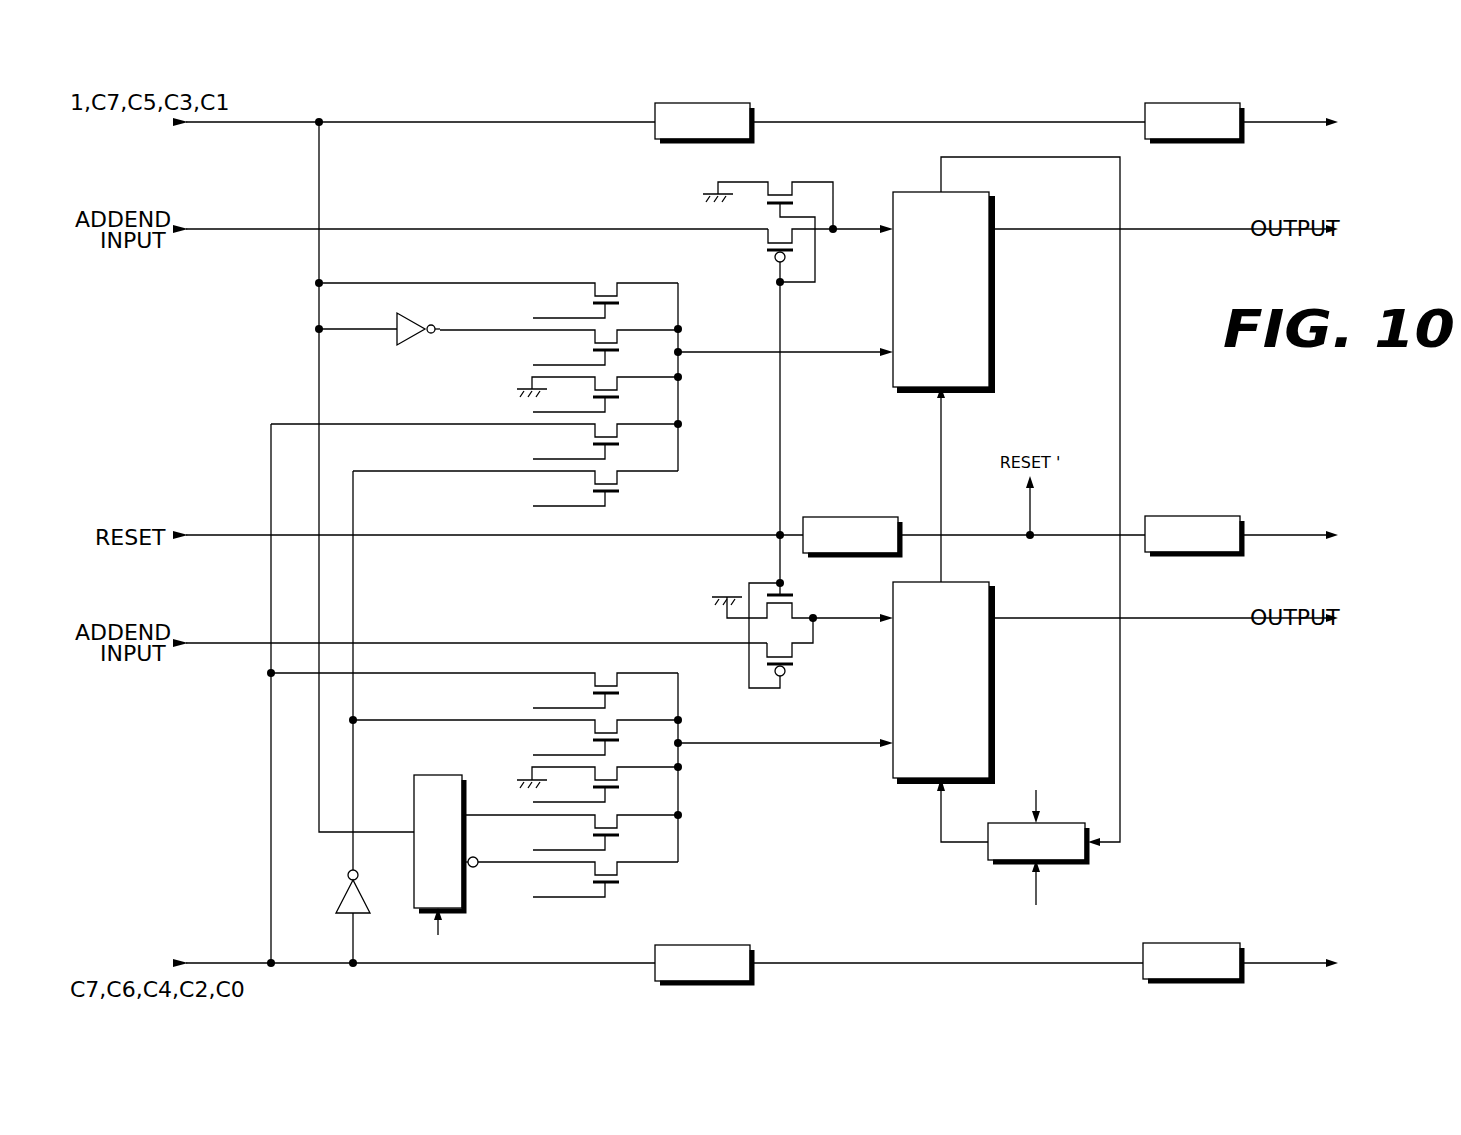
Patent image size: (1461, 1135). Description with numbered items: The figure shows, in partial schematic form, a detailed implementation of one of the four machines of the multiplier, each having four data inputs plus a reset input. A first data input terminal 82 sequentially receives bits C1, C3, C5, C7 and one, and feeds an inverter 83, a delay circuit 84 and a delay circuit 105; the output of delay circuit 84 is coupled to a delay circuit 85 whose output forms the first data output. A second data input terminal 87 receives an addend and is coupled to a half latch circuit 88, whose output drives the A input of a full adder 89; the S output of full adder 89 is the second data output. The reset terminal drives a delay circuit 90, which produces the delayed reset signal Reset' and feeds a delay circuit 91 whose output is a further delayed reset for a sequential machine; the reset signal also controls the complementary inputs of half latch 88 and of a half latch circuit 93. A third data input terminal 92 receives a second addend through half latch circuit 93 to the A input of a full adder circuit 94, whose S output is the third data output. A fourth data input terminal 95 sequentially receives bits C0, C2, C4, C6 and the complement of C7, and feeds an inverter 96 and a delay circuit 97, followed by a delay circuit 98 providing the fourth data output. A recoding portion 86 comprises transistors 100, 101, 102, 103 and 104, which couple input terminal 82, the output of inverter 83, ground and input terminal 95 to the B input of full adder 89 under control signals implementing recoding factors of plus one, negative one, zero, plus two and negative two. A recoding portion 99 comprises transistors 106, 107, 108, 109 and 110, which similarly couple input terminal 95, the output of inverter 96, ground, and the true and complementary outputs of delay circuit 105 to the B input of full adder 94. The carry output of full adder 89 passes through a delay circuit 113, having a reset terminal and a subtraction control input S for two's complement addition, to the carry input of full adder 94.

The first data input terminal 82 is at (319, 121).
The inverter 83 is at (411, 338).
The delay circuit 84 is at (740, 103).
The delay circuit 85 is at (1230, 103).
The recoding portion 86 is at (582, 372).
The second data input terminal 87 is at (224, 229).
The half latch circuit 88 is at (676, 208).
The full adder 89 is at (991, 288).
The delay circuit 90 is at (853, 517).
The delay circuit 91 is at (1230, 516).
The third data input terminal 92 is at (229, 643).
The half latch circuit 93 is at (696, 622).
The full adder circuit 94 is at (991, 678).
The fourth data input terminal 95 is at (270, 963).
The inverter 96 is at (340, 900).
The delay circuit 97 is at (740, 945).
The delay circuit 98 is at (1230, 943).
The recoding portion 99 is at (582, 749).
The transistor 100 is at (619, 303).
The transistor 101 is at (619, 350).
The transistor 102 is at (619, 397).
The transistor 103 is at (619, 444).
The transistor 104 is at (619, 491).
The delay circuit 105 is at (416, 775).
The transistor 106 is at (619, 693).
The transistor 107 is at (619, 740).
The transistor 108 is at (619, 787).
The transistor 109 is at (619, 835).
The transistor 110 is at (619, 882).
The delay circuit 113 is at (1071, 861).